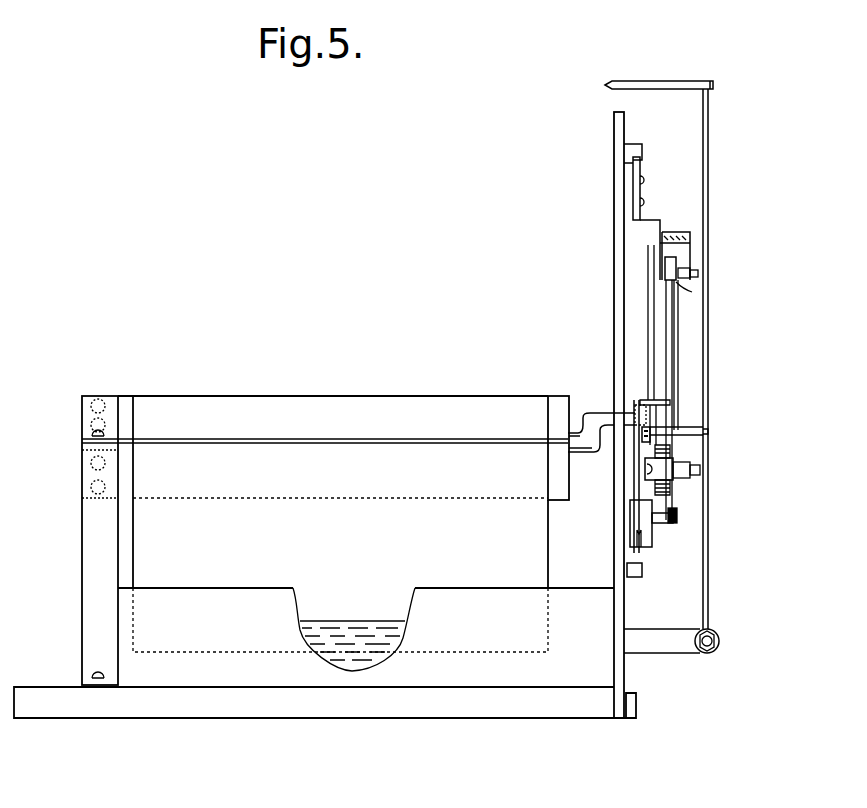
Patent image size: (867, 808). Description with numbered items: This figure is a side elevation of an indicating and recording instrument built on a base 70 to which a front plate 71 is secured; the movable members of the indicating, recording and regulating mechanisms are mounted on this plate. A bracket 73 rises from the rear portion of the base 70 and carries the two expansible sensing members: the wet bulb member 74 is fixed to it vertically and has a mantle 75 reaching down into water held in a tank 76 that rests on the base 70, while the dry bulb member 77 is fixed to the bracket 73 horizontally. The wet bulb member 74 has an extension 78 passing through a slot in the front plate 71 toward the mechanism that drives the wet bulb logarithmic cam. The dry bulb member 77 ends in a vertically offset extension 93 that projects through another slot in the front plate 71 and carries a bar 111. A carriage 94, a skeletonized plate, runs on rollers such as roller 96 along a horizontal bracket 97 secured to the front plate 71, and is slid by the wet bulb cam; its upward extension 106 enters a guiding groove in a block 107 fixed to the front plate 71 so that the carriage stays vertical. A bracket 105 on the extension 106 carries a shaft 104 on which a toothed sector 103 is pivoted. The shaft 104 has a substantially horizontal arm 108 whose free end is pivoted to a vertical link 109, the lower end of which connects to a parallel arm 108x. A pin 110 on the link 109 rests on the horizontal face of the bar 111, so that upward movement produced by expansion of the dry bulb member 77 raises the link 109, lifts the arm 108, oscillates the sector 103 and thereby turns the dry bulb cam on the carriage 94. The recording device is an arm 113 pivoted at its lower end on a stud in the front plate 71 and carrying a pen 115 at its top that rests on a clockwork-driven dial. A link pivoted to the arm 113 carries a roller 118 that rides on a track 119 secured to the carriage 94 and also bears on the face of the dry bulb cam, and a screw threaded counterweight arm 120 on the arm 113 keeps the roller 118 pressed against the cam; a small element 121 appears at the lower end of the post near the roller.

The base 70 is at (467, 712).
The front plate 71 is at (628, 620).
The bracket 73 is at (88, 545).
The wet bulb member 74 is at (143, 397).
The mantle 75 is at (540, 550).
The tank 76 is at (562, 596).
The dry bulb member 77 is at (238, 438).
The extension 78 is at (605, 447).
The extension 93 is at (600, 425).
The carriage 94 is at (636, 489).
The roller 96 is at (645, 555).
The bracket 97 is at (645, 573).
The sector 103 is at (672, 311).
The shaft 104 is at (692, 290).
The bracket 105 is at (660, 221).
The upward extension 106 is at (641, 166).
The block 107 is at (642, 146).
The arm 108 is at (676, 262).
The arm 108x is at (678, 522).
The link 109 is at (679, 338).
The pin 110 is at (656, 402).
The bar 111 is at (635, 413).
The arm 113 is at (710, 545).
The pen 115 is at (656, 80).
The roller 118 is at (651, 432).
The track 119 is at (642, 452).
The screw threaded arm 120 is at (717, 648).
The axle 121 is at (716, 632).